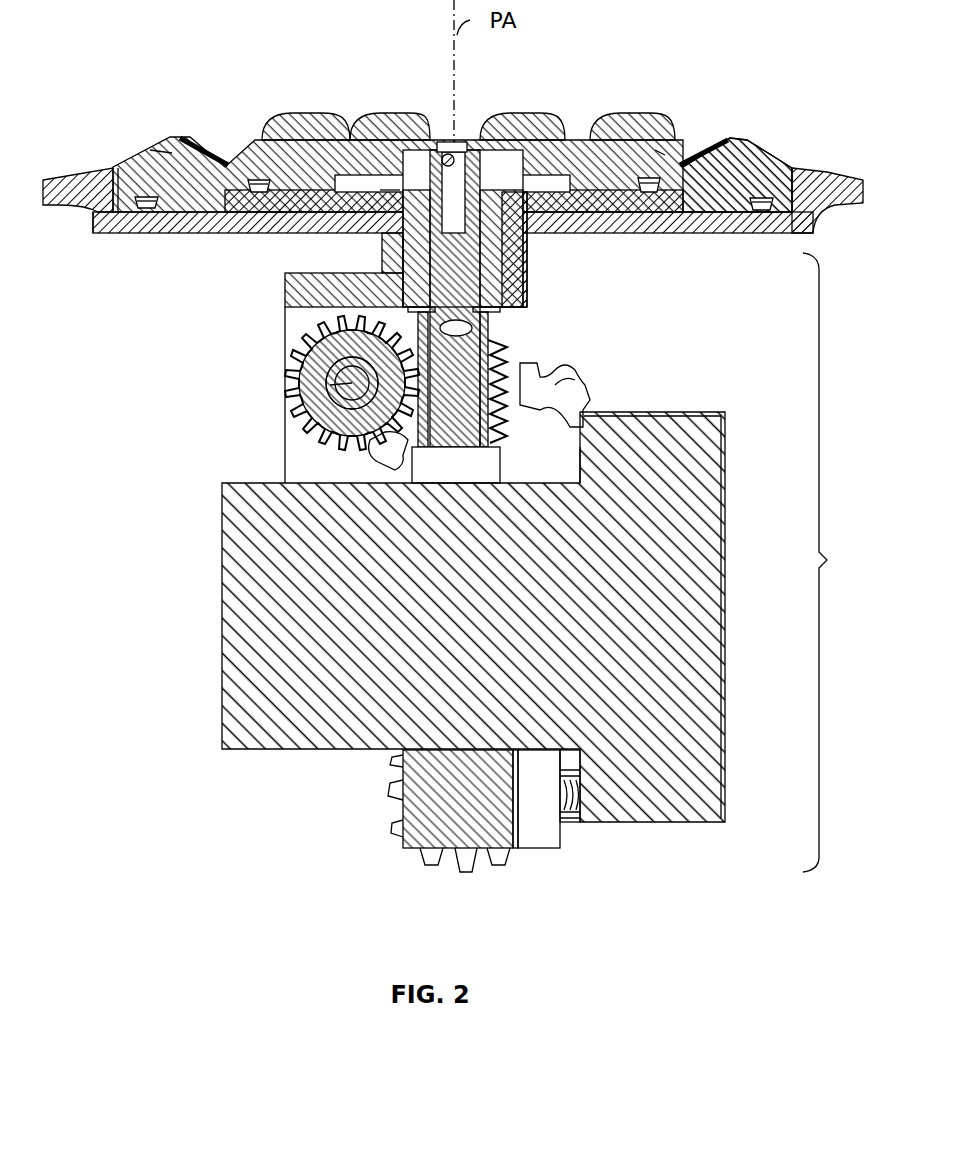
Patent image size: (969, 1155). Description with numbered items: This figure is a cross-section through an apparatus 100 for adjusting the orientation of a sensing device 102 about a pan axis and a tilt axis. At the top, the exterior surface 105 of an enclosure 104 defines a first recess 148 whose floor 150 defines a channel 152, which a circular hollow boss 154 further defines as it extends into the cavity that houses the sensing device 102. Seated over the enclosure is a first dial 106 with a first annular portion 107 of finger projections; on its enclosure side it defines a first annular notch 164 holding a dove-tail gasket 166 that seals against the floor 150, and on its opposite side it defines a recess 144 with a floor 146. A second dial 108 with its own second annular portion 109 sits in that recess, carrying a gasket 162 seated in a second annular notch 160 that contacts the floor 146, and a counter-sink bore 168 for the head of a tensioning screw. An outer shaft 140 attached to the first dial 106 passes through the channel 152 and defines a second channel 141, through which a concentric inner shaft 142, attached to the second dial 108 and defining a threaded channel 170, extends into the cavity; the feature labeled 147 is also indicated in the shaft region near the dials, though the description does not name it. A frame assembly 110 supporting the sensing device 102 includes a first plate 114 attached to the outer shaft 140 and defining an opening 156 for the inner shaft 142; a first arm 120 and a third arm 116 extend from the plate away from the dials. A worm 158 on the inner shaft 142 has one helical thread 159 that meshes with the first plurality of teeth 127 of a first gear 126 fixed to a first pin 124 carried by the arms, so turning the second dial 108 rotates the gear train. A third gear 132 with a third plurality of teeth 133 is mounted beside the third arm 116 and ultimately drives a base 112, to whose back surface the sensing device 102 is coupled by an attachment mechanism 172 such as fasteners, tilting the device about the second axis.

The apparatus 100 is at (143, 38).
The sensing device 102 is at (232, 520).
The enclosure 104 is at (830, 176).
The exterior surface 105 is at (78, 178).
The first dial 106 is at (745, 162).
The first annular portion 107 is at (170, 140).
The second dial 108 is at (570, 160).
The second annular portion 109 is at (608, 128).
The frame assembly 110 is at (828, 560).
The base 112 is at (405, 812).
The first plate 114 is at (296, 286).
The third arm 116 is at (585, 468).
The first arm 120 is at (298, 318).
The first pin 124 is at (300, 410).
The first gear 126 is at (340, 345).
The first plurality of teeth 127 is at (320, 428).
The third gear 132 is at (565, 412).
The third plurality of teeth 133 is at (560, 395).
The outer shaft 140 is at (493, 263).
The second channel 141 is at (343, 180).
The inner shaft 142 is at (465, 298).
The recess 144 is at (760, 212).
The floor 146 is at (618, 182).
The nozzle passage 147 is at (383, 195).
The first recess 148 is at (97, 230).
The floor 150 is at (183, 213).
The channel 152 is at (398, 247).
The boss 154 is at (378, 266).
The opening 156 is at (502, 311).
The worm 158 is at (502, 367).
The helical thread 159 is at (385, 458).
The second annular notch 160 is at (662, 152).
The gasket 162 is at (650, 195).
The first annular notch 164 is at (172, 153).
The gasket 166 is at (146, 210).
The counter-sink bore 168 is at (442, 146).
The channel 170 is at (458, 185).
The attachment mechanism 172 is at (568, 825).